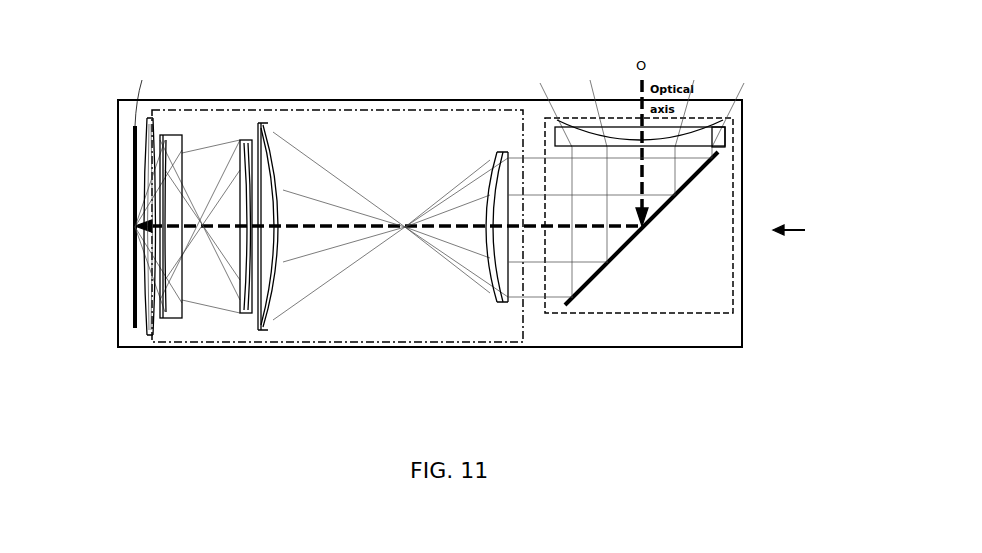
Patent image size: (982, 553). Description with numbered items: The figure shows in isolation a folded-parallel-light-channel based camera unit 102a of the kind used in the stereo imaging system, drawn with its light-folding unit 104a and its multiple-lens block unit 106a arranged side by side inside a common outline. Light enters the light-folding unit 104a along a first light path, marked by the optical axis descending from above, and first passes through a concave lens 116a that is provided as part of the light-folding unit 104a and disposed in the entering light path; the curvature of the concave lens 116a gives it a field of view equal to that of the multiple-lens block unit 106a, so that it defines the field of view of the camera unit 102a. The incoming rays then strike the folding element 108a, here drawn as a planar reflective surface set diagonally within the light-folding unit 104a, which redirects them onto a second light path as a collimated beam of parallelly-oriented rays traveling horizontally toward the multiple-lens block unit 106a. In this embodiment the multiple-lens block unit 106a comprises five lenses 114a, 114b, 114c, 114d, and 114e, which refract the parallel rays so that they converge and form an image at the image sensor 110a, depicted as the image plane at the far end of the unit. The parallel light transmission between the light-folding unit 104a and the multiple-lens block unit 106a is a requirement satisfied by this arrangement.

The FPLC-based camera unit 102a is at (810, 233).
The light-folding unit 104a is at (742, 183).
The multiple-lens block unit 106a is at (312, 109).
The folding element 108a is at (668, 188).
The image sensor 110a is at (133, 267).
The lens 114a is at (157, 313).
The lens 114b is at (177, 307).
The lens 114c is at (247, 307).
The lens 114d is at (275, 282).
The lens 114e is at (497, 273).
The concave lens 116a is at (723, 140).